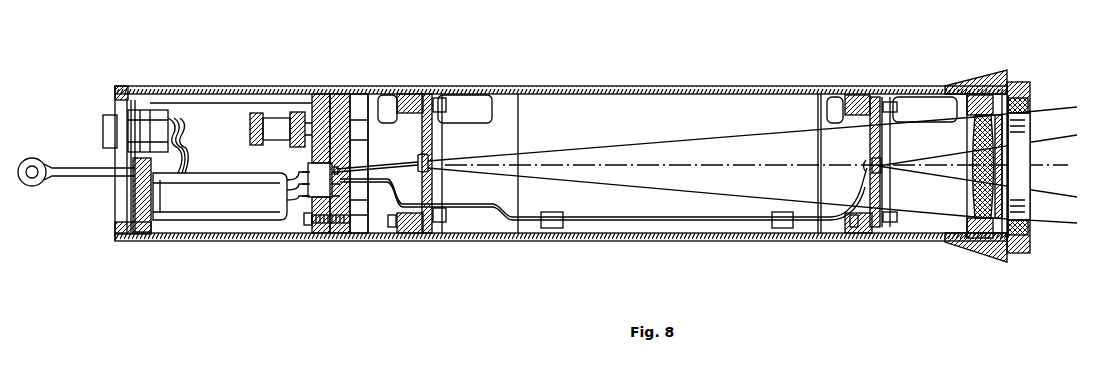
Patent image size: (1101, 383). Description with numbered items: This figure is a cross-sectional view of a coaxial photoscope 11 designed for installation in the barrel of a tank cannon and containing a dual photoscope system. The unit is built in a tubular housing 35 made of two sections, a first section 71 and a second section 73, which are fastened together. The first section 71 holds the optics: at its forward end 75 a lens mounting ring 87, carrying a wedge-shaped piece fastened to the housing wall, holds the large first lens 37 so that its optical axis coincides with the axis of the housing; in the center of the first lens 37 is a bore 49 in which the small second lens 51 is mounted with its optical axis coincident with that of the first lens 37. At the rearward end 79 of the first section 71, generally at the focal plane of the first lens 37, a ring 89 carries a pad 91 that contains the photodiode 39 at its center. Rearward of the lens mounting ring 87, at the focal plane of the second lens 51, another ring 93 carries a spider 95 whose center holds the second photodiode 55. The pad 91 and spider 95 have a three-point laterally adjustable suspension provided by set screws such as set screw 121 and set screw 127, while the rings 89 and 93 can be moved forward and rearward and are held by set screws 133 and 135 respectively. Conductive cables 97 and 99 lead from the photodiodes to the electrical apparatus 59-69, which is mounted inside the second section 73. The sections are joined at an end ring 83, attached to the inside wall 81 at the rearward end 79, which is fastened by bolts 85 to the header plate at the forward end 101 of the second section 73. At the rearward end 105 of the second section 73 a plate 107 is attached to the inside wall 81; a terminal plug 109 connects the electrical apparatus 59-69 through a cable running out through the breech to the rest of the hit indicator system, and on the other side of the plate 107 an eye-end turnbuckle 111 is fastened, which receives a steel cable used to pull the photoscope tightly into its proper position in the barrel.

The coaxial photoscope 11 is at (661, 258).
The tubular housing 35 is at (548, 86).
The first lens 37 is at (975, 120).
The photodiode 39 is at (430, 160).
The bore 49 is at (975, 142).
The second lens 51 is at (973, 170).
The second photodiode 55 is at (870, 162).
The electrical apparatus 59-69 is at (230, 170).
The first section 71 is at (672, 85).
The second section 73 is at (257, 86).
The forward end 75 is at (936, 243).
The rearward end 79 is at (400, 241).
The inside wall 81 is at (342, 92).
The end ring 83 is at (320, 92).
The bolts 85 is at (300, 227).
The lens mounting ring 87 is at (1013, 250).
The ring 89 is at (410, 235).
The pad 91 is at (433, 190).
The ring 93 is at (875, 235).
The spider 95 is at (883, 137).
The conductive cable 97 is at (386, 166).
The conductive cable 99 is at (645, 216).
The forward end 101 is at (318, 243).
The rearward end 105 is at (143, 242).
The plate 107 is at (118, 212).
The terminal plug 109 is at (103, 118).
The eye-end turnbuckle 111 is at (65, 167).
The set screw 121 is at (428, 92).
The set screw 127 is at (878, 96).
The set screw 133 is at (393, 233).
The set screw 135 is at (858, 235).